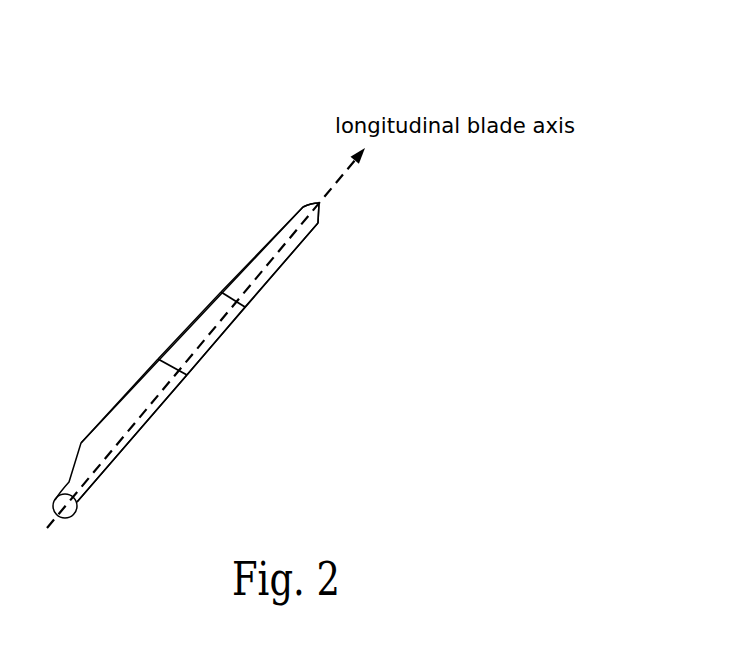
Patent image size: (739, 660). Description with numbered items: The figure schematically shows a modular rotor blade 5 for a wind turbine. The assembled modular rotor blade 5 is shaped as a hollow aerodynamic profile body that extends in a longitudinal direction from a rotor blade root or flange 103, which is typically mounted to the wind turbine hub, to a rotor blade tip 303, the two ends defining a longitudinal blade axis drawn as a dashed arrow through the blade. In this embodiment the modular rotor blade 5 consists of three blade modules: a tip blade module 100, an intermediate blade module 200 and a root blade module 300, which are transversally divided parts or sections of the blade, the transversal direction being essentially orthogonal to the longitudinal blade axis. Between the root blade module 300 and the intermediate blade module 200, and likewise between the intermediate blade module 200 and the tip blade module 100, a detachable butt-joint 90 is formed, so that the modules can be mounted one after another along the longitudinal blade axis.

The modular rotor blade 5 is at (260, 106).
The detachable butt-joint 90 is at (237, 297).
The tip blade module 100 is at (147, 392).
The rotor blade root 103 is at (77, 502).
The intermediate blade module 200 is at (204, 320).
The root blade module 300 is at (290, 248).
The rotor blade tip 303 is at (321, 204).